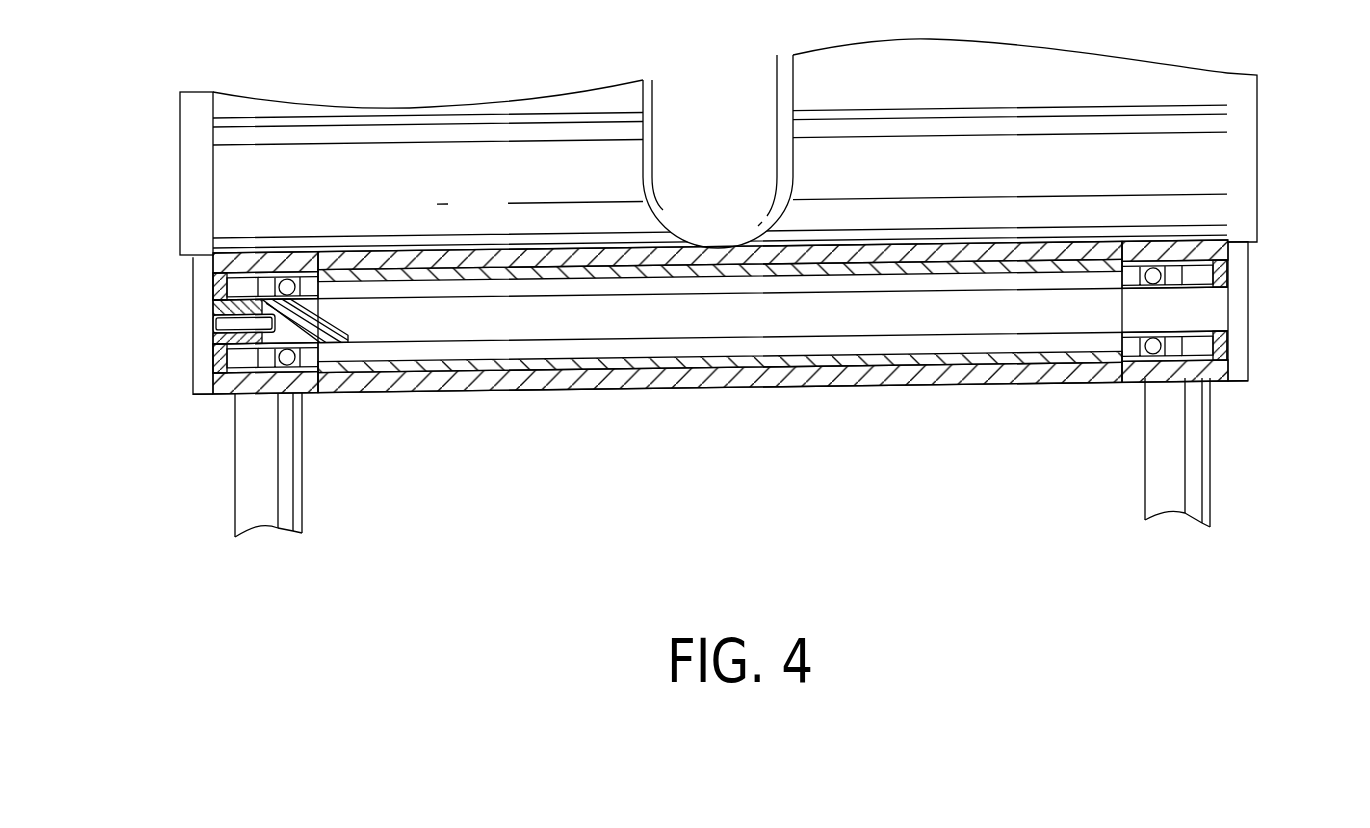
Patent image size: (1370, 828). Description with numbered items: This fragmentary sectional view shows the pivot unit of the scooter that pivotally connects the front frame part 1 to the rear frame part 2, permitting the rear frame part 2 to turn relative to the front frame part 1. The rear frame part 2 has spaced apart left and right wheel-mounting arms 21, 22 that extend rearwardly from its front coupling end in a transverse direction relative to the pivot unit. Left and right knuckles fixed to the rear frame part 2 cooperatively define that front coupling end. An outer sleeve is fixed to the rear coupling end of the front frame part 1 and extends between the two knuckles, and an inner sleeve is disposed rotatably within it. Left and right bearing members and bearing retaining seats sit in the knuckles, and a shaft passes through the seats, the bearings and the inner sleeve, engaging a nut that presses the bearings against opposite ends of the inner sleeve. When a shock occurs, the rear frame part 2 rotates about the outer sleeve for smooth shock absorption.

The front frame part 1 is at (1272, 122).
The rear frame part 2 is at (773, 457).
The left wheel-mounting arm 21 is at (297, 460).
The right wheel-mounting arm 22 is at (1158, 463).